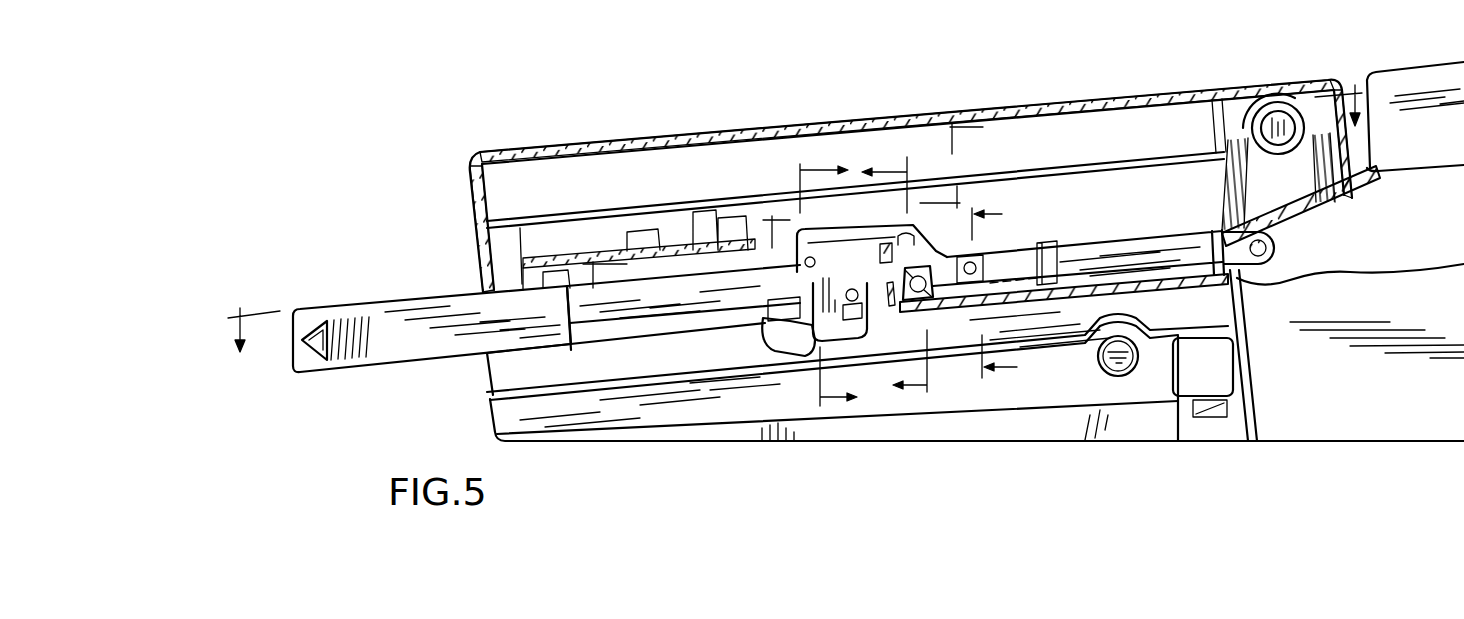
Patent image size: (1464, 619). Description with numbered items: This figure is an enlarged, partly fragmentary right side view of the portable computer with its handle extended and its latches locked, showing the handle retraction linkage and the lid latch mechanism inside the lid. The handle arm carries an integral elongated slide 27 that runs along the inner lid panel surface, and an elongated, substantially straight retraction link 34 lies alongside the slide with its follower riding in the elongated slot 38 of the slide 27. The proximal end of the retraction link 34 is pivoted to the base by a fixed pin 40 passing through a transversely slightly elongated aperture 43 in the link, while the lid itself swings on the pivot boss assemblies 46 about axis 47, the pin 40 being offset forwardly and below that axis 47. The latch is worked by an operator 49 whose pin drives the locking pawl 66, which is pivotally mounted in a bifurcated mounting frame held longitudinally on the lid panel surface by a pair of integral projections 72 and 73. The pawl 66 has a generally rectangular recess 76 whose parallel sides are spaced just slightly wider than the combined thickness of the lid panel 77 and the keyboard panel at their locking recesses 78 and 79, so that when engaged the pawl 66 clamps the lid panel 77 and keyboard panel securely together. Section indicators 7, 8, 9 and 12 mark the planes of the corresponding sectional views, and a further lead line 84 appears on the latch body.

The section line 12- 12 is at (796, 200).
The slide 27 is at (703, 277).
The slot 38 is at (753, 262).
The locking pawl 66 is at (817, 270).
The operator 49 is at (930, 235).
The retraction link 34 is at (1143, 241).
The pivot boss assemblies 46 is at (1288, 98).
The axis 47 is at (1292, 118).
The aperture 43 is at (1313, 219).
The fixed pin 40 is at (1278, 257).
The projection 72 is at (735, 300).
The locking recess 79 is at (775, 357).
The projection 73 is at (912, 292).
The locking recess 78 is at (807, 353).
The rectangular recess 76 is at (868, 333).
The hatched post 84 is at (878, 333).
The lid panel 77 is at (975, 305).
The section line 7- 7 is at (810, 288).
The section line 8- 8 is at (922, 260).
The section line 9- 9 is at (980, 283).